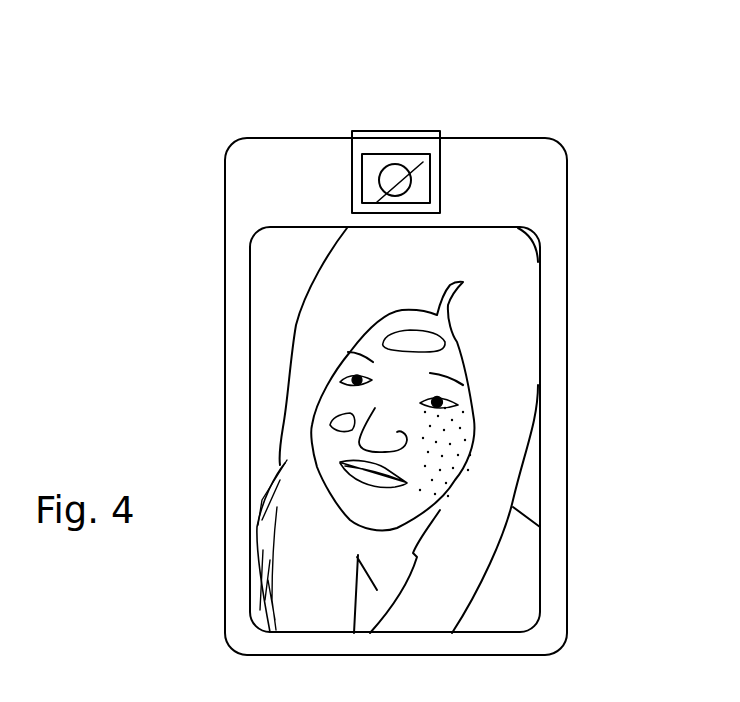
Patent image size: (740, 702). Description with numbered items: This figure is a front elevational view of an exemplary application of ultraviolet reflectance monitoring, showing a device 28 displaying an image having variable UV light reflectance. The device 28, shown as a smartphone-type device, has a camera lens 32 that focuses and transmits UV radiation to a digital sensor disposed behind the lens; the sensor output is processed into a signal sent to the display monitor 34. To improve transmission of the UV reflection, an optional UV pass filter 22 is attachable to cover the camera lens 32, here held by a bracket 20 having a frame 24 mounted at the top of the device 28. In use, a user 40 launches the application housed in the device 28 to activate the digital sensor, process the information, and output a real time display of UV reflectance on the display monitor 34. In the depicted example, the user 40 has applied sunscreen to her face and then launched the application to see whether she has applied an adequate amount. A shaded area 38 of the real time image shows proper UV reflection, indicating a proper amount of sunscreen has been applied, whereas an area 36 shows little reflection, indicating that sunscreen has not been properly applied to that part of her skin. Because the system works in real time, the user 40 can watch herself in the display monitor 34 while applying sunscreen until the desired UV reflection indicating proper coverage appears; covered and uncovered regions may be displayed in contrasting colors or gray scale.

The bracket 20 is at (397, 116).
The UV pass filter 22 is at (420, 176).
The frame 24 is at (352, 180).
The device 28 is at (220, 252).
The camera lens 32 is at (395, 170).
The display monitor 34 is at (525, 327).
The area 36 is at (328, 425).
The shaded area 38 is at (443, 450).
The user 40 is at (322, 330).